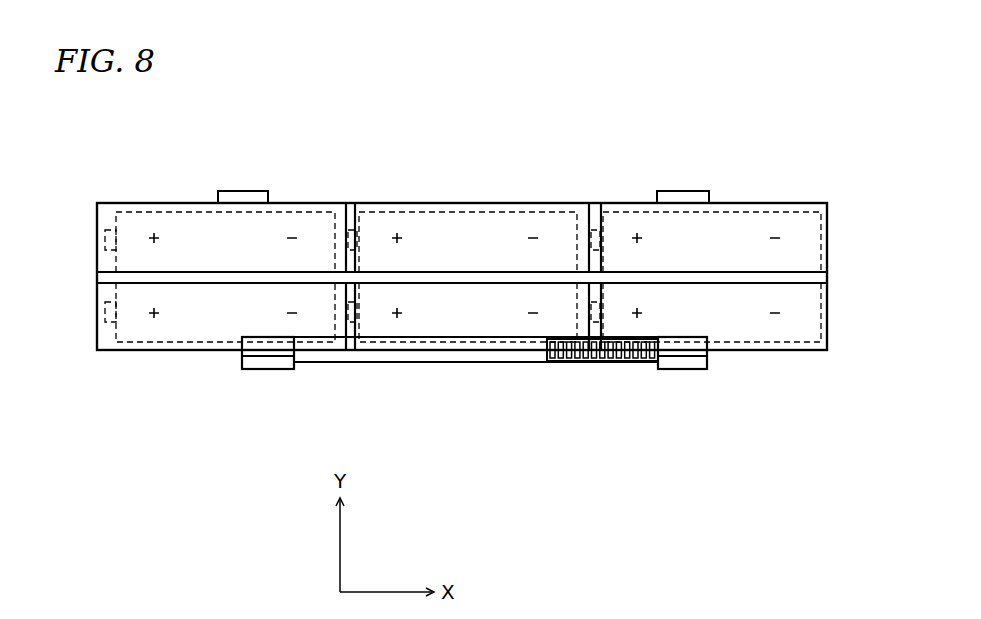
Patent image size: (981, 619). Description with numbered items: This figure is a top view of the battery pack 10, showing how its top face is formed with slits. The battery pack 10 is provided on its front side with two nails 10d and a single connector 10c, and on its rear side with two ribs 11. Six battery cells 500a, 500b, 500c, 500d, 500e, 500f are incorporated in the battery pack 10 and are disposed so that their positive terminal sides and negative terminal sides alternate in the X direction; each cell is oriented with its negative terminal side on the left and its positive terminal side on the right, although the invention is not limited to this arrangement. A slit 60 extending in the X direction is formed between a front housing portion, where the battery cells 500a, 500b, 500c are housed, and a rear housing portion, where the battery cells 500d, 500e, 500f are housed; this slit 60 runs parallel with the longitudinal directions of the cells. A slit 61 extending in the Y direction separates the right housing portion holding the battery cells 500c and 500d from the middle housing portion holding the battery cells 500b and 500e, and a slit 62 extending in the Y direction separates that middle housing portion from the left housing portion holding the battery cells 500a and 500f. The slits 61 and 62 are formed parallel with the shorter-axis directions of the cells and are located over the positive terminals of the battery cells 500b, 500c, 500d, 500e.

The battery pack 10 is at (423, 148).
The rib 11 is at (250, 198).
The slit 60 is at (101, 278).
The slit 61 is at (594, 206).
The slit 62 is at (352, 206).
The connector 10c is at (592, 368).
The nail 10d is at (255, 362).
The battery cell 500a is at (137, 333).
The battery cell 500b is at (458, 325).
The battery cell 500c is at (750, 325).
The battery cell 500d is at (750, 218).
The battery cell 500e is at (458, 218).
The battery cell 500f is at (137, 218).